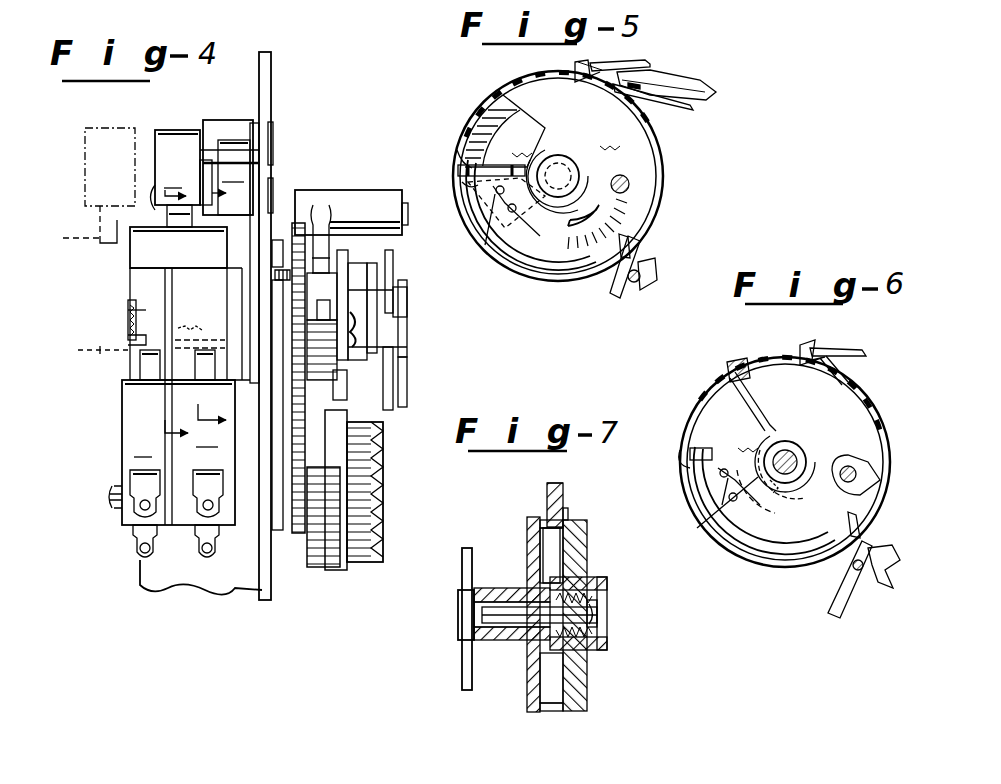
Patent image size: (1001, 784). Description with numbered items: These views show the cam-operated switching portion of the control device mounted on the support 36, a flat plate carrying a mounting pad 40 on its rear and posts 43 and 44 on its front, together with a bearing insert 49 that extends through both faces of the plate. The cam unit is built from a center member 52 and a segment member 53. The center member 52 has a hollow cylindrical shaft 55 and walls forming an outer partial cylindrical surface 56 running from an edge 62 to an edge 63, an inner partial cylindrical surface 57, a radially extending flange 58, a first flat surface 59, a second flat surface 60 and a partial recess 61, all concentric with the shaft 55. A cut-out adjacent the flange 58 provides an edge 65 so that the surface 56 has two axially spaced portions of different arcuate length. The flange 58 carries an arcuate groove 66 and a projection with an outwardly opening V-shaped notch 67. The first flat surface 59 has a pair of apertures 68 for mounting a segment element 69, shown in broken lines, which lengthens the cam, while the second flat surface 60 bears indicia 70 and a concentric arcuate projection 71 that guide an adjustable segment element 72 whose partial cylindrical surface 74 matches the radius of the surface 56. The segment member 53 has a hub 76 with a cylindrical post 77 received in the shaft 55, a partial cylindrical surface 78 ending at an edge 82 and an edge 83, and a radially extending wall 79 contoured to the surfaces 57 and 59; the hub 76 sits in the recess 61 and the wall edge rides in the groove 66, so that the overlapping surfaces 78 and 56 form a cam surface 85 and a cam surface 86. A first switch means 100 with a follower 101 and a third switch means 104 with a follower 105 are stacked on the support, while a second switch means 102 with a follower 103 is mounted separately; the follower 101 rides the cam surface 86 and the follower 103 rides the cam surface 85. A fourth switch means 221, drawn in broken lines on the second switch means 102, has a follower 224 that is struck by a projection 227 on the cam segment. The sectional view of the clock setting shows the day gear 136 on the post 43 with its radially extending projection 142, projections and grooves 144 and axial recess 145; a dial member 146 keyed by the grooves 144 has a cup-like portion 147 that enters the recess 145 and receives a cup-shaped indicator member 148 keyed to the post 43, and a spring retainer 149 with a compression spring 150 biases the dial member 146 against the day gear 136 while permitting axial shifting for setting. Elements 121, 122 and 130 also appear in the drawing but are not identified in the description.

In FIG. 4, the support 36 is at (272, 82).
In FIG. 7, the support 36 is at (475, 563).
In FIG. 4, the mounting pad 40 is at (230, 124).
In FIG. 7, the post 43 is at (475, 632).
In FIG. 4, the post 44 is at (292, 565).
In FIG. 4, the bearing insert 49 is at (262, 284).
In FIG. 4, the center member 52 is at (175, 282).
In FIG. 4, the segment member 53 is at (131, 256).
In FIG. 6, the hollow cylindrical shaft 55 is at (778, 512).
In FIG. 4, the outer partial cylindrical surface 56 is at (200, 324).
In FIG. 5, the outer partial cylindrical surface 56 is at (672, 206).
In FIG. 6, the outer partial cylindrical surface 56 is at (872, 458).
In FIG. 6, the inner partial cylindrical surface 57 is at (700, 522).
In FIG. 6, the flange 58 is at (874, 406).
In FIG. 5, the first flat surface 59 is at (521, 143).
In FIG. 6, the first flat surface 59 is at (745, 438).
In FIG. 5, the second flat surface 60 is at (609, 136).
In FIG. 5, the partial recess 61 is at (551, 152).
In FIG. 6, the partial recess 61 is at (806, 446).
In FIG. 5, the edge 62 is at (490, 97).
In FIG. 6, the edge 62 is at (735, 372).
In FIG. 5, the edge 63 is at (490, 238).
In FIG. 6, the edge 65 is at (803, 546).
In FIG. 5, the arcuate groove 66 is at (526, 265).
In FIG. 6, the arcuate groove 66 is at (731, 545).
In FIG. 5, the V-shaped notch 67 is at (579, 68).
In FIG. 6, the V-shaped notch 67 is at (808, 345).
In FIG. 5, the apertures 68 is at (513, 213).
In FIG. 6, the apertures 68 is at (738, 500).
In FIG. 5, the segment element 69 is at (466, 205).
In FIG. 5, the indicia 70 is at (591, 270).
In FIG. 5, the arcuate projection 71 is at (625, 173).
In FIG. 4, the segment element 72 is at (129, 310).
In FIG. 4, the partial cylindrical surface 74 is at (148, 338).
In FIG. 5, the hub 76 is at (569, 212).
In FIG. 6, the cylindrical post 77 is at (785, 450).
In FIG. 5, the partial cylindrical surface 78 is at (478, 120).
In FIG. 5, the radially extending wall 79 is at (461, 185).
In FIG. 5, the edge 82 is at (664, 165).
In FIG. 6, the edge 82 is at (880, 441).
In FIG. 5, the edge 83 is at (478, 152).
In FIG. 6, the edge 83 is at (682, 448).
In FIG. 5, the cam surface 85 is at (640, 128).
In FIG. 6, the cam surface 86 is at (848, 380).
In FIG. 4, the first switch means 100 is at (186, 525).
In FIG. 5, the first switch means 100 is at (652, 281).
In FIG. 6, the first switch means 100 is at (876, 587).
In FIG. 4, the follower 101 is at (200, 368).
In FIG. 5, the follower 101 is at (640, 257).
In FIG. 6, the follower 101 is at (860, 533).
In FIG. 4, the second switch means 102 is at (178, 143).
In FIG. 5, the second switch means 102 is at (690, 86).
In FIG. 4, the follower 103 is at (170, 232).
In FIG. 5, the follower 103 is at (641, 97).
In FIG. 4, the third switch means 104 is at (125, 516).
In FIG. 4, the follower 105 is at (148, 366).
In FIG. 4, the lever 121 is at (250, 150).
In FIG. 5, the lever 122 is at (604, 63).
In FIG. 4, the motor 130 is at (328, 222).
In FIG. 4, the day gear 136 is at (384, 432).
In FIG. 7, the day gear 136 is at (530, 695).
In FIG. 7, the radially extending projection 142 is at (556, 500).
In FIG. 7, the projections and grooves 144 is at (571, 514).
In FIG. 7, the axial recess 145 is at (565, 545).
In FIG. 7, the dial member 146 is at (583, 566).
In FIG. 7, the cup-like portion 147 is at (547, 670).
In FIG. 7, the indicator member 148 is at (600, 587).
In FIG. 7, the spring retainer 149 is at (600, 625).
In FIG. 7, the compression spring 150 is at (586, 640).
In FIG. 4, the fourth switch means 221 is at (119, 140).
In FIG. 4, the follower 224 is at (80, 224).
In FIG. 4, the projection 227 is at (83, 342).